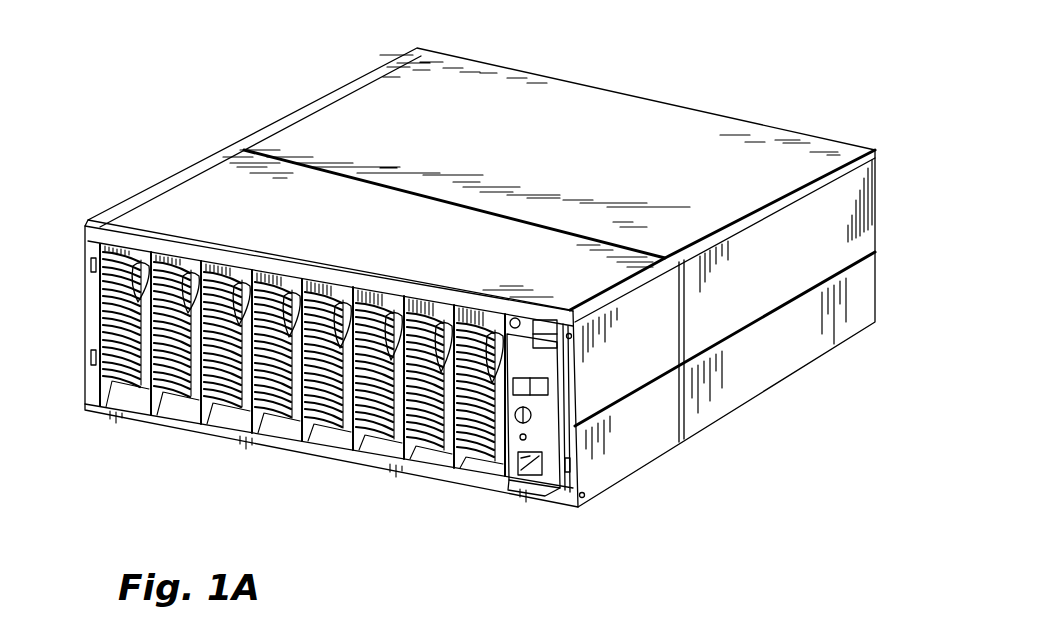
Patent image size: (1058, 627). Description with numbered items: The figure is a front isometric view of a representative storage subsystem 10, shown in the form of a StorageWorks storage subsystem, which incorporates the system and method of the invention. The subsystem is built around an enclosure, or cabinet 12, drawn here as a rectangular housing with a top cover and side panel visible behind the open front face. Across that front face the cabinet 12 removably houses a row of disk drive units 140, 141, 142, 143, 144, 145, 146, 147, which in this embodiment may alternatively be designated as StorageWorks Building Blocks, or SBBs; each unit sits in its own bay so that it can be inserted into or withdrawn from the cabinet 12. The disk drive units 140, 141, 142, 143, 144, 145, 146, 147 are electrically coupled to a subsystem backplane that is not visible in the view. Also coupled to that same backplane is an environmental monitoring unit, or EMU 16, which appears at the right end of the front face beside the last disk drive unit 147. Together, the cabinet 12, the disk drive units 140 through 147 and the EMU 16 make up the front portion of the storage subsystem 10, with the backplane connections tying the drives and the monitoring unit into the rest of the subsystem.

The storage subsystem 10 is at (170, 138).
The cabinet 12 is at (578, 122).
The disk drive unit 140 is at (123, 387).
The disk drive unit 141 is at (183, 395).
The disk drive unit 142 is at (237, 403).
The disk drive unit 143 is at (288, 417).
The disk drive unit 144 is at (338, 425).
The disk drive unit 145 is at (392, 432).
The disk drive unit 146 is at (435, 448).
The disk drive unit 147 is at (488, 458).
The environmental monitoring unit 16 is at (538, 425).